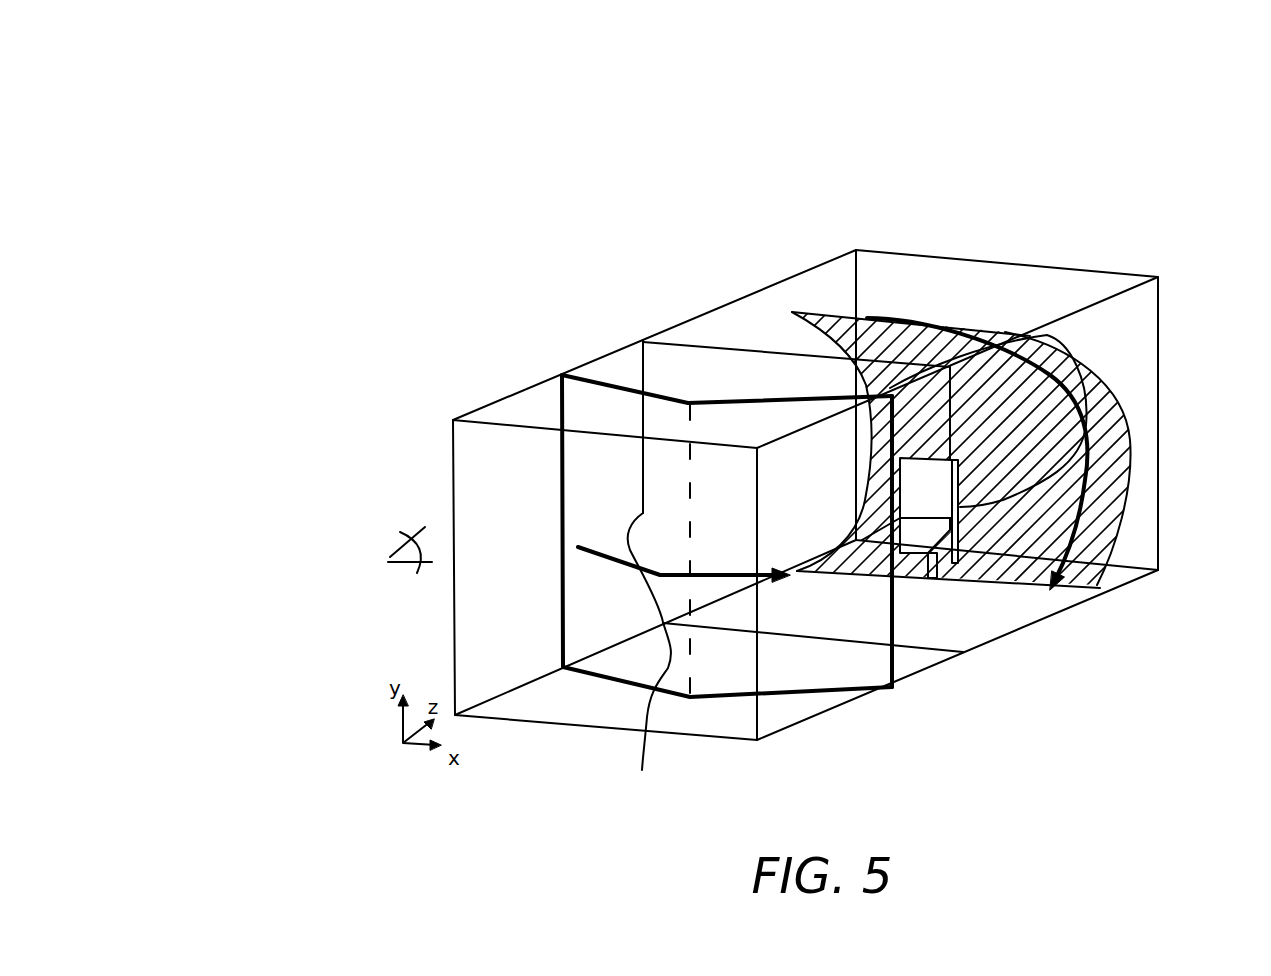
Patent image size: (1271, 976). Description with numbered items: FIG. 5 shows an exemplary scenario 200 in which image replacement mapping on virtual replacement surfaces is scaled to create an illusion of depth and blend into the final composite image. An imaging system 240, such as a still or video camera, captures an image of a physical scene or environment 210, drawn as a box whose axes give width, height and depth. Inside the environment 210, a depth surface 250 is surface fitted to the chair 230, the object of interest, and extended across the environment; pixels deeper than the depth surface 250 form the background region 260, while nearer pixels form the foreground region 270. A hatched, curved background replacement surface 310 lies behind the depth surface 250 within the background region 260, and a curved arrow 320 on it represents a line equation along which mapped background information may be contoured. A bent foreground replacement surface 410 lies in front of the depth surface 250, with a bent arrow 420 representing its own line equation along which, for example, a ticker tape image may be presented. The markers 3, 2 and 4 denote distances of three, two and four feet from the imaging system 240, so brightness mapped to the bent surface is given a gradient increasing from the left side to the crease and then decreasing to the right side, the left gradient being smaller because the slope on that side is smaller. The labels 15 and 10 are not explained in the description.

The imaging scene 200 is at (780, 57).
The physical scene or environment 210 is at (705, 314).
The background replacement surface 310 is at (810, 315).
The line equation on background replacement surface 320 is at (1090, 368).
The chair 230 is at (1120, 420).
The depth surface 250 is at (662, 372).
The object surface corner 15 is at (608, 486).
The three-foot depth marker 3 is at (713, 669).
The two-foot depth marker 2 is at (698, 568).
The four-foot depth marker 4 is at (898, 559).
The foreground replacement surface 410 is at (587, 422).
The line equation on foreground replacement surface 420 is at (644, 661).
The imaging system 240 is at (523, 562).
The background region 260 is at (1042, 603).
The foreground region 270 is at (777, 716).
The object 10 is at (931, 580).